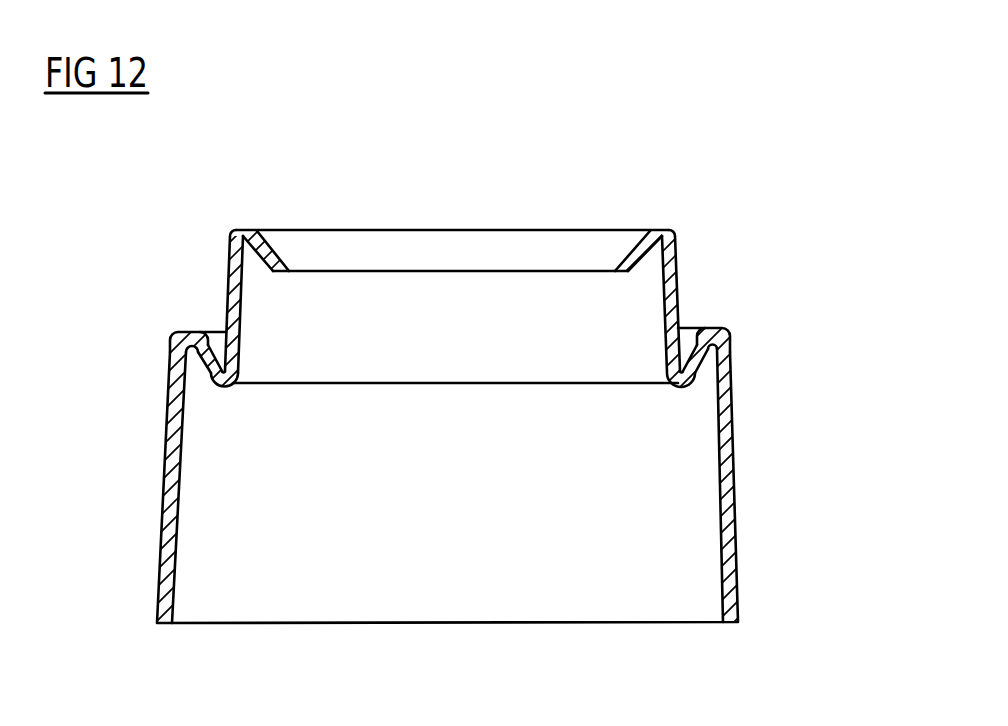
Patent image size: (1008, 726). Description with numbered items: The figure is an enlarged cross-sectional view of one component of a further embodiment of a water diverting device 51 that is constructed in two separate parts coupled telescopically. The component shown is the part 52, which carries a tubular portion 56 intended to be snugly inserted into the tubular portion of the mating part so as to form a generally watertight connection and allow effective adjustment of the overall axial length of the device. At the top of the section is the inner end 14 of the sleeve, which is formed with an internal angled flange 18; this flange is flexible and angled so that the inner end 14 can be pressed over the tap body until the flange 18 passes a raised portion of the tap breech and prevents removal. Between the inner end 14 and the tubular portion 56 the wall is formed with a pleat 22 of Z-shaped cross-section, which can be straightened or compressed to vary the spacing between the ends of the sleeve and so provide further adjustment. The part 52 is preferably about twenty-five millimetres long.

The inner end 14 is at (504, 350).
The internal angled flange 18 is at (413, 250).
The pleat 22 is at (212, 377).
The water diverting device 51 is at (172, 271).
The part 52 is at (143, 358).
The tubular portion 56 is at (160, 538).